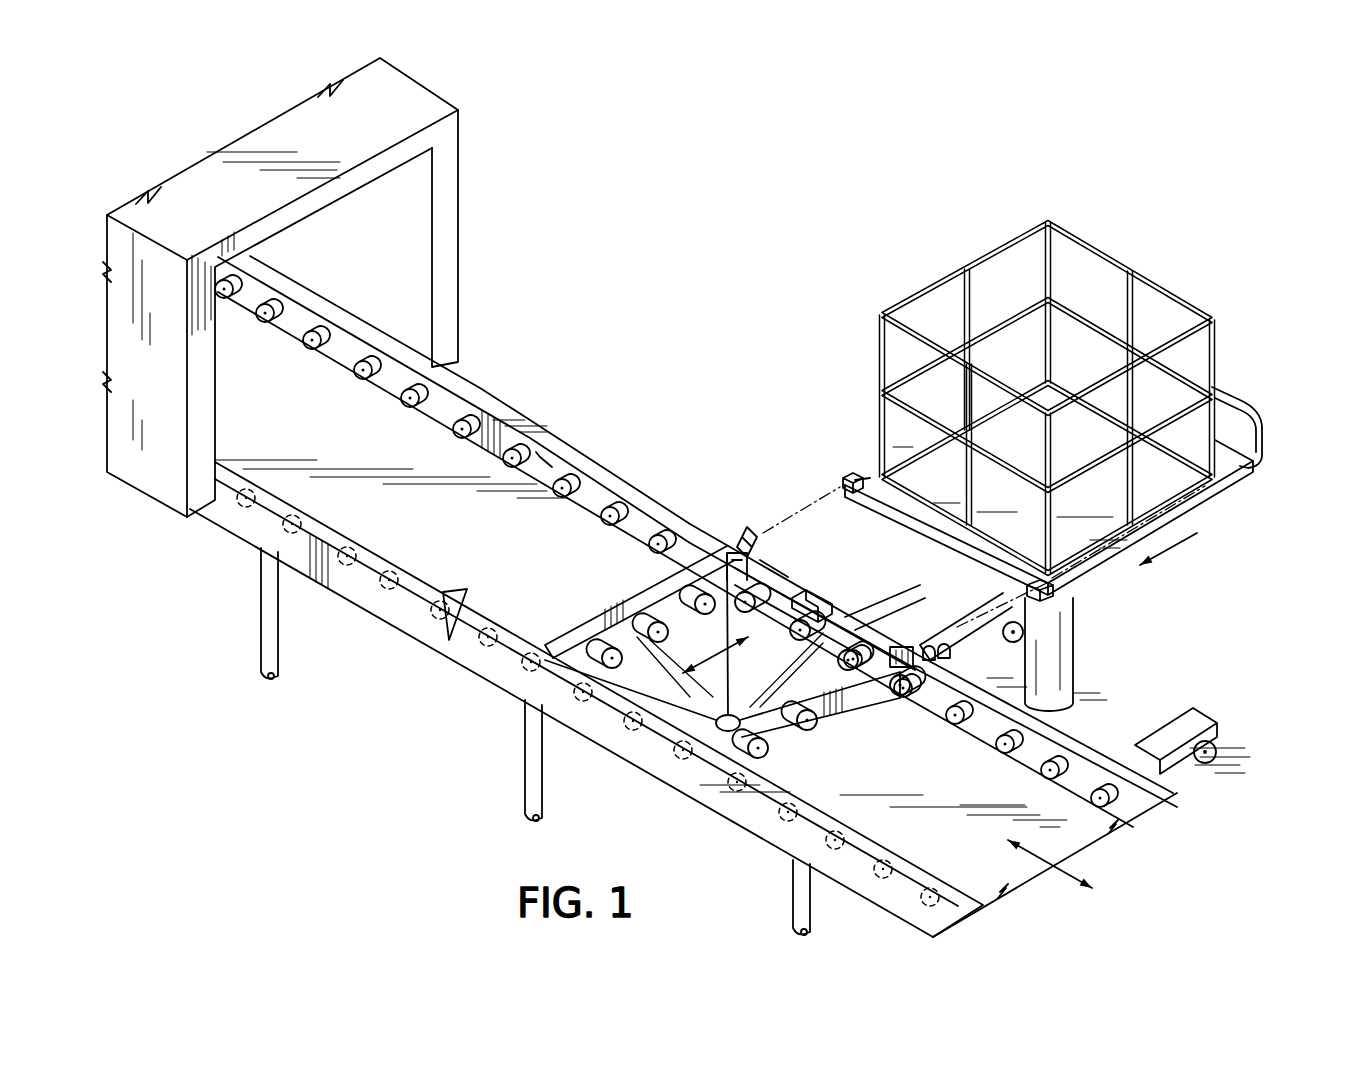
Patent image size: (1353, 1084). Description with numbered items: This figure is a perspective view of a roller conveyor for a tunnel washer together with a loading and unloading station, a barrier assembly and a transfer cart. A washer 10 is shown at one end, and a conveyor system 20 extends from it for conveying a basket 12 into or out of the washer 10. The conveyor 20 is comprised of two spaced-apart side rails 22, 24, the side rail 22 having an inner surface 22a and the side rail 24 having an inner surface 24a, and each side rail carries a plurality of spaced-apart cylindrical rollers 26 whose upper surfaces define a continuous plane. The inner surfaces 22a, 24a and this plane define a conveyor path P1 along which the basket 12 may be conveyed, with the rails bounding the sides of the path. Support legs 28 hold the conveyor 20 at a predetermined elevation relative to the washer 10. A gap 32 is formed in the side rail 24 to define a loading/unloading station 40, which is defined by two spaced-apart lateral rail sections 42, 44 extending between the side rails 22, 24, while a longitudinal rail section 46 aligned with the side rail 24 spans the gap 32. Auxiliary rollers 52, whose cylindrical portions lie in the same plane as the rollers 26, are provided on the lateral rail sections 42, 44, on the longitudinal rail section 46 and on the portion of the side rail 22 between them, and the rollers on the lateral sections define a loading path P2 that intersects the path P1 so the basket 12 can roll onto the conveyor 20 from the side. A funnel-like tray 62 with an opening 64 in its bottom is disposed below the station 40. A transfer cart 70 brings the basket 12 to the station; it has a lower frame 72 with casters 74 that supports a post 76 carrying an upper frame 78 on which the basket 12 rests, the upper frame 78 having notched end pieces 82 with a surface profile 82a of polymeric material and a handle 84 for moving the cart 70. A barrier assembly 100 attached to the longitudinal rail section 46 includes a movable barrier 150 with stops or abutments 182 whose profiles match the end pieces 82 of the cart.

The washer 10 is at (478, 122).
The basket 12 is at (998, 245).
The conveyor system 20 is at (550, 418).
The side rail 22 is at (395, 622).
The inner surface 22a is at (449, 640).
The side rail 24 is at (482, 400).
The inner surface 24a is at (543, 460).
The rollers 26 is at (455, 430).
The support legs 28 is at (266, 642).
The gap 32 is at (780, 553).
The loading/unloading station 40 is at (729, 640).
The lateral rail section 42 is at (653, 597).
The lateral rail section 44 is at (850, 703).
The longitudinal rail section 46 is at (788, 577).
The auxiliary rollers 52 is at (593, 643).
The tray or pan 62 is at (683, 637).
The opening 64 is at (722, 732).
The transfer cart 70 is at (1020, 477).
The lower frame 72 is at (1177, 723).
The casters 74 is at (1023, 632).
The post 76 is at (1057, 670).
The upper frame 78 is at (1197, 513).
The end pieces 82 is at (847, 475).
The notched portion 82a is at (845, 487).
The handle 84 is at (1235, 397).
The barrier assembly 100 is at (847, 592).
The movable barrier 150 is at (865, 603).
The stops or abutments 182 is at (750, 527).
The conveyor path P1 is at (1057, 870).
The loading path P2 is at (708, 663).